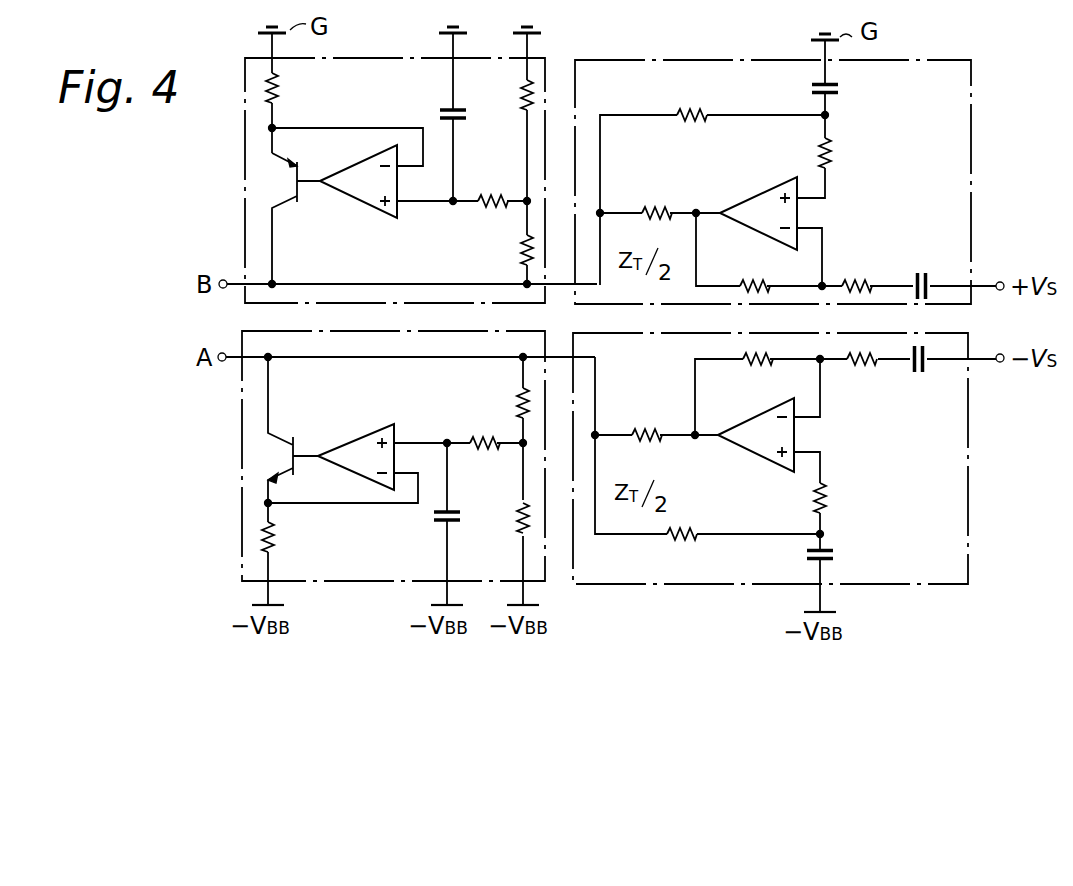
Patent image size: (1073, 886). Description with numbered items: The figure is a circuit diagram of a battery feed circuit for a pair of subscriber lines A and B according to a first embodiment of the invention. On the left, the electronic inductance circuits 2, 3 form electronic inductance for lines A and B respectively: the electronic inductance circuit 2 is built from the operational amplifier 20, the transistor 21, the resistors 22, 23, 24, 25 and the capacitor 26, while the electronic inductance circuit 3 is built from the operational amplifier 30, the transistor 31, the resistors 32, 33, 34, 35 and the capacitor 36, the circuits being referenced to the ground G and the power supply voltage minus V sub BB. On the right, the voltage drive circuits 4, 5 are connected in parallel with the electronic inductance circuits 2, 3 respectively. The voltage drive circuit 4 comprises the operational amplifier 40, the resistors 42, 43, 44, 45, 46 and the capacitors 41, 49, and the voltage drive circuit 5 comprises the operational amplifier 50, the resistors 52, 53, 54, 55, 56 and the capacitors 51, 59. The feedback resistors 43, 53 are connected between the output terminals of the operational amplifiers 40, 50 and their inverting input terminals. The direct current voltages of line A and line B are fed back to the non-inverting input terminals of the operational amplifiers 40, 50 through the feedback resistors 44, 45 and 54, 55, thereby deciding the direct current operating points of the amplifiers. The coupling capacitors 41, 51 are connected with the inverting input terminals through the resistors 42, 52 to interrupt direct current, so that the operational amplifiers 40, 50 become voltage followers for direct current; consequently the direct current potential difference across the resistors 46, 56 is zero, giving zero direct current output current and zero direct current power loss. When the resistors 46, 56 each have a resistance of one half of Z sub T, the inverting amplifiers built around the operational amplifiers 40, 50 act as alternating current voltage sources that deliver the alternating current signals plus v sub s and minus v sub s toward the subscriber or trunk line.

The electronic inductance circuit 2 is at (242, 478).
The electronic inductance circuit 3 is at (246, 166).
The voltage drive circuit 4 is at (968, 476).
The voltage drive circuit 5 is at (975, 146).
The operational amplifier 20 is at (370, 426).
The transistor 21 is at (282, 426).
The resistor 22 is at (516, 522).
The resistor 23 is at (516, 405).
The resistor 24 is at (472, 438).
The resistor 25 is at (276, 537).
The capacitor 26 is at (459, 512).
The operational amplifier 30 is at (363, 169).
The transistor 31 is at (278, 166).
The resistor 32 is at (520, 108).
The resistor 33 is at (520, 254).
The resistor 34 is at (482, 198).
The resistor 35 is at (279, 87).
The capacitor 36 is at (464, 113).
The operational amplifier 40 is at (764, 459).
The coupling capacitor 41 is at (919, 374).
The resistor 42 is at (852, 366).
The feedback resistor 43 is at (746, 366).
The feedback resistor 44 is at (828, 497).
The feedback resistor 45 is at (682, 530).
The resistor 46 is at (642, 426).
The capacitor 49 is at (836, 556).
The operational amplifier 50 is at (750, 191).
The coupling capacitor 51 is at (920, 272).
The resistor 52 is at (851, 284).
The feedback resistor 53 is at (746, 284).
The feedback resistor 54 is at (831, 152).
The feedback resistor 55 is at (696, 110).
The resistor 56 is at (658, 206).
The capacitor 59 is at (840, 93).